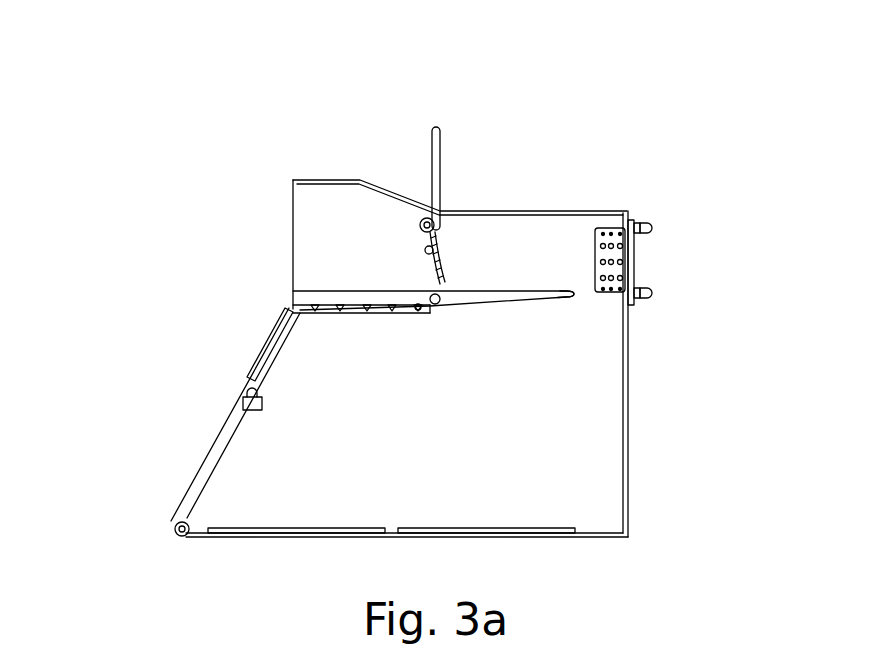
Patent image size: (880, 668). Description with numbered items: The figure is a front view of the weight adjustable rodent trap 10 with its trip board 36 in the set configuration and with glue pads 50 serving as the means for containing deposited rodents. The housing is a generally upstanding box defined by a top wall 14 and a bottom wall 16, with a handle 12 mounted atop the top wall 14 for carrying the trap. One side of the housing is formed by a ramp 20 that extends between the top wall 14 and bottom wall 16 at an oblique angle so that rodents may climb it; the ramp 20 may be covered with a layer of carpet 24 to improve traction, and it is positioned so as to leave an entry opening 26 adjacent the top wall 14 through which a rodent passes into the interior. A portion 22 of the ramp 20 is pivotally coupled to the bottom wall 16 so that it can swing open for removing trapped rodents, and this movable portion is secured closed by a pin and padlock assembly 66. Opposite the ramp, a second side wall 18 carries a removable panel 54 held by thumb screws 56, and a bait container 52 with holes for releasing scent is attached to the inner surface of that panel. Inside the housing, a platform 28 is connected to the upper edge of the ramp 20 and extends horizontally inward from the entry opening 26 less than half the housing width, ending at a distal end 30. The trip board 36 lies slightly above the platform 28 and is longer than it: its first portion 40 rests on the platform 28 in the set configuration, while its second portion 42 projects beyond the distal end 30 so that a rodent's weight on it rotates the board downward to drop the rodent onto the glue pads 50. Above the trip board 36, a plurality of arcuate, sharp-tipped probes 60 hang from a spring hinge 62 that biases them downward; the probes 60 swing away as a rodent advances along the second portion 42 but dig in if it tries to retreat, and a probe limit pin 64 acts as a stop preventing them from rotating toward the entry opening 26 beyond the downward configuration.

The weight adjustable rodent trap 10 is at (321, 95).
The handle 12 is at (440, 146).
The top wall 14 is at (507, 210).
The bottom wall 16 is at (590, 535).
The second side wall 18 is at (628, 367).
The ramp 20 is at (209, 373).
The movable ramp portion 22 is at (175, 422).
The layer of carpet 24 is at (213, 456).
The entry opening 26 is at (256, 219).
The platform 28 is at (379, 346).
The distal end of the platform 30 is at (427, 315).
The trip board 36 is at (505, 322).
The first portion of the trip board 40 is at (384, 335).
The second portion of the trip board 42 is at (550, 295).
The glue pads 50 is at (452, 527).
The bait container 52 is at (595, 250).
The removable panel 54 is at (700, 254).
The thumb screws 56 is at (648, 295).
The probes 60 is at (447, 267).
The spring hinge 62 is at (418, 224).
The probe limit pin 64 is at (425, 252).
The pin and padlock assembly 66 is at (273, 417).